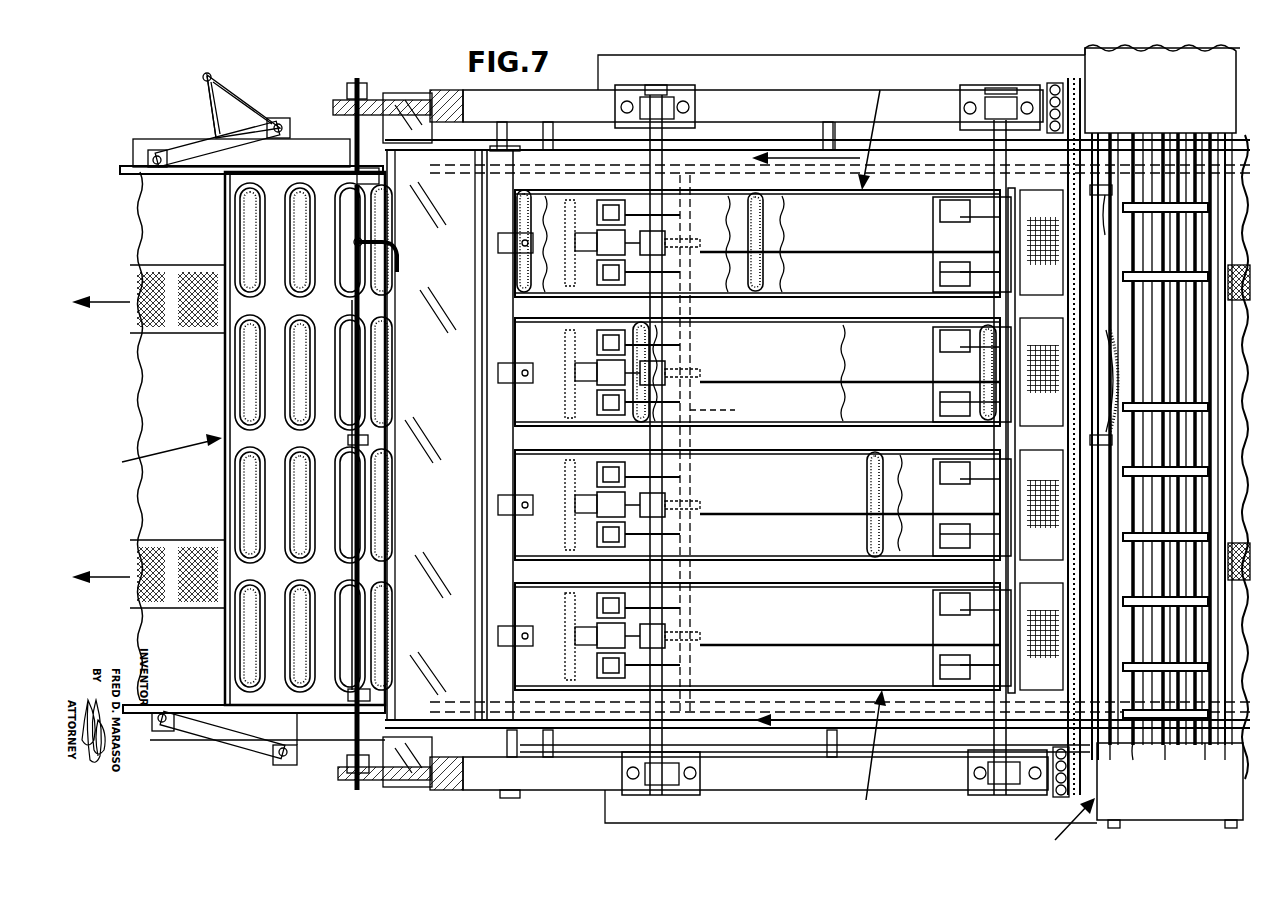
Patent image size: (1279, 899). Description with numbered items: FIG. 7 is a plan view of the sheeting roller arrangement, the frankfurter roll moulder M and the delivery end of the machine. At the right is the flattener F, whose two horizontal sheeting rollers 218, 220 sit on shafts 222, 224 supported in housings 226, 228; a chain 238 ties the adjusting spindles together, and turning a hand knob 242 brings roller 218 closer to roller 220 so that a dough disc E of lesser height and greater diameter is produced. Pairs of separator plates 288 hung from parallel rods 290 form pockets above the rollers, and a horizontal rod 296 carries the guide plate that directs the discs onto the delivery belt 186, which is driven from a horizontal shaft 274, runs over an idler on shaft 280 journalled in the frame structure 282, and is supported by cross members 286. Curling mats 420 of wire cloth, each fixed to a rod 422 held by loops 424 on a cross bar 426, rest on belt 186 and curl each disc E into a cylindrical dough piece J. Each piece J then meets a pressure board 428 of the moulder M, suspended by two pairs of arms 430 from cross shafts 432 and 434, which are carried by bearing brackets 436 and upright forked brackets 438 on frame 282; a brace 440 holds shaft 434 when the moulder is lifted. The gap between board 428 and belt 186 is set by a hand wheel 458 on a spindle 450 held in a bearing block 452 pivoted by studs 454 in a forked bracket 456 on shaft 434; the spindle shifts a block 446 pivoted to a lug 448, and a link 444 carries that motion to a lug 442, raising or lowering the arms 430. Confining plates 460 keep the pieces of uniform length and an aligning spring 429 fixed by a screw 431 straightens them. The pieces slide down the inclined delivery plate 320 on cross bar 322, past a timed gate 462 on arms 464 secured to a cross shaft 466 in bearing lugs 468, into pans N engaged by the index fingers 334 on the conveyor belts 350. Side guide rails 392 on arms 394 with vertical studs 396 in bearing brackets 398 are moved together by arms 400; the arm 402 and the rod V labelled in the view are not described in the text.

The horizontal delivery belt 186 is at (490, 400).
The sheeting roller 218 is at (1180, 128).
The sheeting roller 220 is at (1234, 174).
The shaft 222 is at (1121, 766).
The shaft 224 is at (1209, 767).
The housing 226 is at (1205, 832).
The housing 228 is at (1086, 48).
The chain 238 is at (1078, 82).
The hand knob 242 is at (1062, 84).
The horizontal shaft 274 is at (1167, 771).
The horizontal shaft 280 is at (508, 128).
The frame structure 282 is at (762, 92).
The cross members 286 is at (834, 130).
The separator plates 288 is at (1103, 210).
The parallel rods 290 is at (1159, 753).
The horizontal rod 296 is at (1189, 124).
The inclined delivery plate 320 is at (470, 208).
The cross bar 322 is at (392, 282).
The index fingers 334 is at (397, 248).
The endless belts 350 is at (180, 270).
The side guide rails 392 is at (122, 165).
The arms 394 is at (220, 140).
The vertical stud 396 is at (286, 120).
The bearing bracket 398 is at (241, 153).
The arm 400 is at (239, 90).
The lever arm 402 is at (212, 110).
The curling mat 420 is at (1043, 296).
The rod 422 is at (1088, 568).
The loops 424 is at (1096, 184).
The horizontal cross bar 426 is at (1106, 184).
The pressure board 428 is at (510, 530).
The aligning spring 429 is at (527, 630).
The arms 430 is at (949, 217).
The screw 431 is at (527, 498).
The cross shaft 432 is at (994, 128).
The cross shaft 434 is at (663, 114).
The bearing brackets 436 is at (1002, 96).
The upright forked brackets 438 is at (666, 98).
The brace 440 is at (788, 752).
The upright lug 442 is at (996, 272).
The link 444 is at (804, 252).
The block 446 is at (666, 258).
The lug 448 is at (670, 630).
The spindle 450 is at (692, 238).
The bearing block 452 is at (594, 284).
The studs 454 is at (563, 366).
The forked bracket 456 is at (629, 542).
The hand wheel 458 is at (570, 378).
The confining plates 460 is at (882, 186).
The timed gate 462 is at (370, 442).
The arms 464 is at (352, 701).
The cross shaft 466 is at (351, 82).
The bearing lugs 468 is at (400, 100).
The cylindrical dough piece J is at (250, 218).
The rod V is at (345, 265).
The pans for frankfurter rolls N is at (427, 440).
The roll moulder M is at (822, 442).
The dough disc E is at (1108, 392).
The flattener F is at (1068, 834).